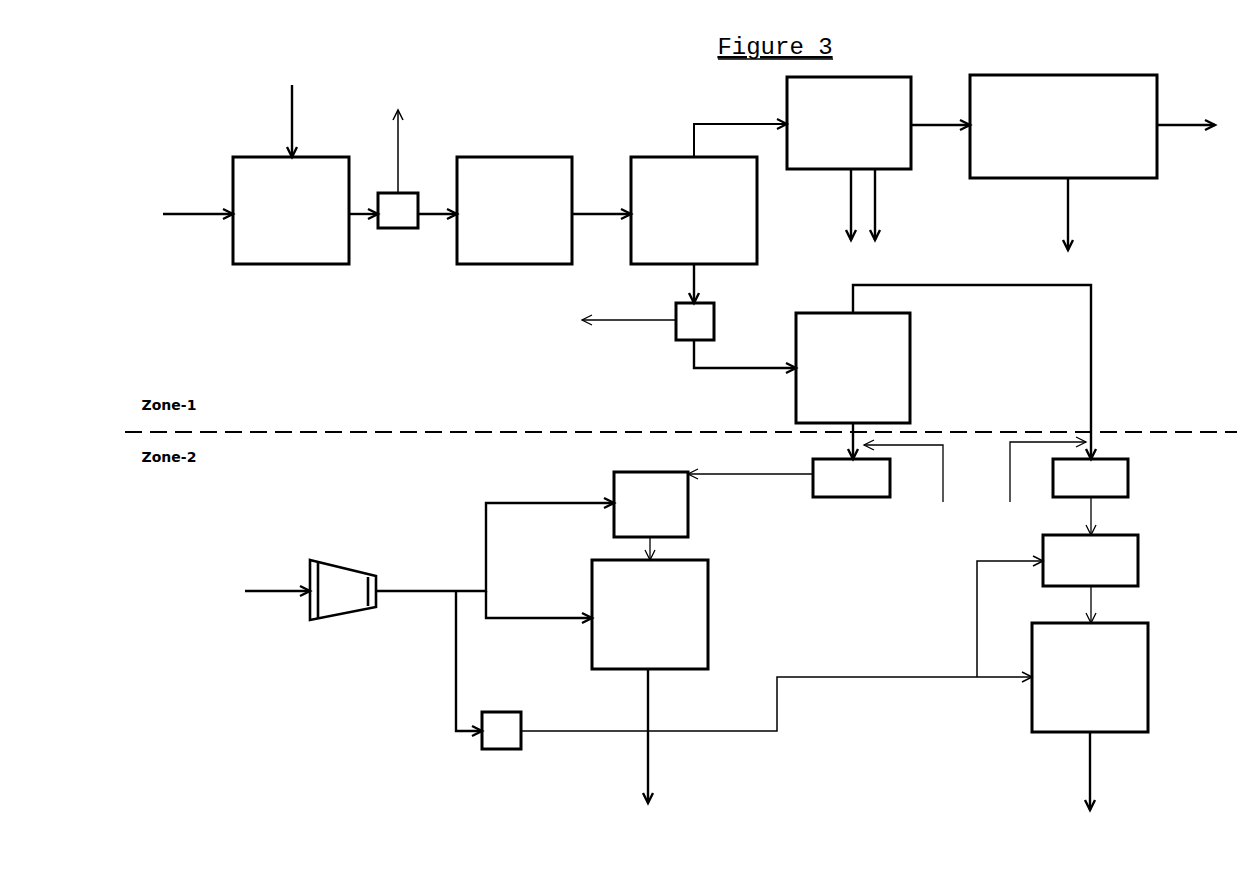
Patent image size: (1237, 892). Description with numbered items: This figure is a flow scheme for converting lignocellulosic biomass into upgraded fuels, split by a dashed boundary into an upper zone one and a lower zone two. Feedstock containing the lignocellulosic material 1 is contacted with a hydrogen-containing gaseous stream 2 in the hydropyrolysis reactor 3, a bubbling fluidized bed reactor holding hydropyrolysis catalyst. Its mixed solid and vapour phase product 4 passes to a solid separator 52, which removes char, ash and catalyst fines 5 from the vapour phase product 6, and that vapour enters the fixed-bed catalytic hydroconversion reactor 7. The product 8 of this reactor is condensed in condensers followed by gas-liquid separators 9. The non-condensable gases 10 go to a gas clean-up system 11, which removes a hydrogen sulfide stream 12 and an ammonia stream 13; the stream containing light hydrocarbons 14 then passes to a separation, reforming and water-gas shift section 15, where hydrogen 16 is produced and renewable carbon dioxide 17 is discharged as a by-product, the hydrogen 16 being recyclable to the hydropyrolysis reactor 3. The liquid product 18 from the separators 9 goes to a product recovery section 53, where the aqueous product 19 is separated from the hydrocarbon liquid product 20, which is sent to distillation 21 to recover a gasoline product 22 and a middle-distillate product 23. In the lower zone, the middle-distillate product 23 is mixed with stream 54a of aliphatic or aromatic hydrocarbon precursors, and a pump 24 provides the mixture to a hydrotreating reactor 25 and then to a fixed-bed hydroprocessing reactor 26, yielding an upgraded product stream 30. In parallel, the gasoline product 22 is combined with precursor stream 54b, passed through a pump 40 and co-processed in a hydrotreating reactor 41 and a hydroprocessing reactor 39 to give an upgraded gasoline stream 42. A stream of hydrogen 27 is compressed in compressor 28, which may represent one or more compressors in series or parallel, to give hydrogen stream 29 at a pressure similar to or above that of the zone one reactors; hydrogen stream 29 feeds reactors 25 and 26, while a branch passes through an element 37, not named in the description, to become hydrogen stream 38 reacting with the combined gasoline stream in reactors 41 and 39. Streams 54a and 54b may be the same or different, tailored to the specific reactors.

The feedstock containing lignocellulosic material 1 is at (198, 224).
The hydrogen-containing gaseous stream 2 is at (298, 121).
The hydropyrolysis reactor 3 is at (291, 210).
The product of hydropyrolysis reactor 4 is at (363, 220).
The char, ash and catalyst fines 5 is at (403, 151).
The vapour phase product 6 is at (437, 220).
The catalytic hydroconversion reactor 7 is at (514, 210).
The product of hydroconversion reactor 8 is at (601, 219).
The condensers and gas-liquid separators 9 is at (694, 210).
The non-condensable gases 10 is at (740, 122).
The gas clean-up system 11 is at (849, 123).
The H2S stream 12 is at (836, 204).
The ammonia stream 13 is at (882, 204).
The stream containing light hydrocarbons 14 is at (940, 115).
The separation, reforming and water-gas shift section 15 is at (1063, 126).
The hydrogen 16 is at (1186, 134).
The renewable CO2 by-product 17 is at (1057, 214).
The liquid product 18 is at (682, 283).
The aqueous product 19 is at (629, 309).
The hydrocarbon liquid product 20 is at (745, 356).
The distillation 21 is at (853, 368).
The gasoline product 22 is at (985, 372).
The middle-distillate product 23 is at (842, 441).
The pump 24 is at (789, 478).
The hydrotreating reactor 25 is at (651, 516).
The fixed-bed hydroprocessing reactor 26 is at (650, 614).
The stream of hydrogen 27 is at (277, 598).
The compressor 28 is at (343, 604).
The hydrogen stream 29 is at (495, 617).
The upgraded product stream 30 is at (648, 751).
The splitter 37 is at (501, 730).
The hydrogen stream 38 is at (782, 643).
The hydroprocessing reactor 39 is at (1090, 677).
The pump 40 is at (1090, 497).
The hydrotreating reactor 41 is at (1090, 579).
The upgraded gasoline stream 42 is at (1090, 782).
The solid separator 52 is at (398, 210).
The product recovery section 53 is at (695, 321).
The stream containing aliphatic or aromatic hydrocarbon precursors 54a is at (912, 484).
The stream containing aliphatic or aromatic hydrocarbon precursors 54b is at (1042, 482).